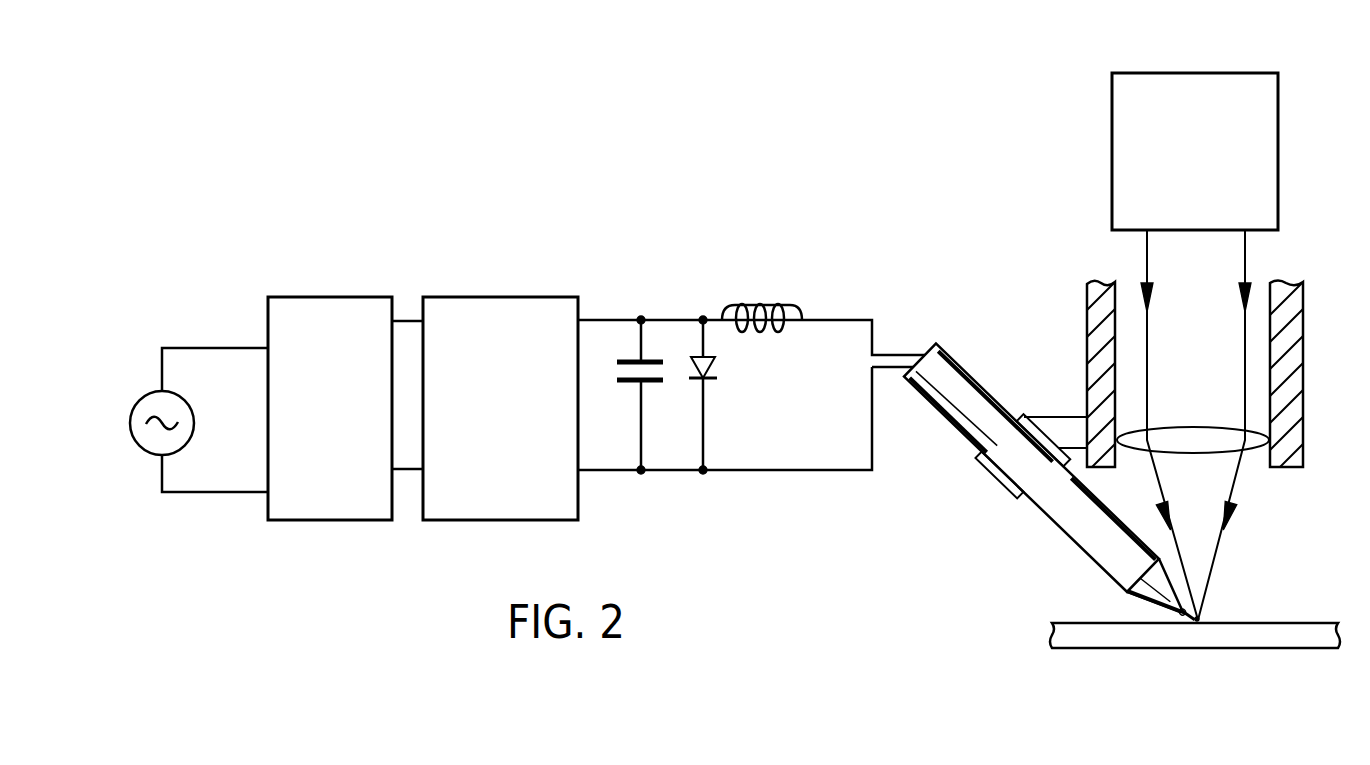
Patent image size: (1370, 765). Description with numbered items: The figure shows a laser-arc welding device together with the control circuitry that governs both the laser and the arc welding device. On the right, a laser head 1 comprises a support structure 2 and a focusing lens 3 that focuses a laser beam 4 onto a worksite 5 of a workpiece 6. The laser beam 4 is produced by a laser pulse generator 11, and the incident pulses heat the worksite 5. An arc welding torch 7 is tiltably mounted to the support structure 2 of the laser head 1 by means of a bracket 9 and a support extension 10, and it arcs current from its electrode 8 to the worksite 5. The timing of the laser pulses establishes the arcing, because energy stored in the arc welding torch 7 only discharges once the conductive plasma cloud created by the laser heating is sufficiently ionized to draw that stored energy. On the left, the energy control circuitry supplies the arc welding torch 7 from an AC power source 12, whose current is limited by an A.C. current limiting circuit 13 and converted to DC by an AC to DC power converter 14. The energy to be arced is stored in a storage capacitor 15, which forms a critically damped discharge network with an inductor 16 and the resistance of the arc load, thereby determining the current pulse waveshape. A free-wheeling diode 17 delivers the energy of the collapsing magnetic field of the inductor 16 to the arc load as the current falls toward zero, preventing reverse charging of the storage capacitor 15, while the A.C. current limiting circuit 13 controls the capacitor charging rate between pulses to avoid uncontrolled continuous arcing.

The laser head 1 is at (1087, 299).
The support structure 2 is at (1303, 348).
The focusing lens 3 is at (1182, 427).
The laser beam 4 is at (1233, 492).
The worksite 5 is at (1203, 619).
The workpiece 6 is at (1075, 622).
The arc welding torch 7 is at (1080, 543).
The electrode 8 is at (1188, 618).
The bracket 9 is at (1005, 485).
The support extension 10 is at (1063, 417).
The laser pulse generator 11 is at (1278, 168).
The AC power source 12 is at (171, 390).
The A.C. current limiting circuit 13 is at (320, 297).
The AC to DC power converter 14 is at (482, 297).
The storage capacitor 15 is at (641, 350).
The inductor 16 is at (765, 304).
The free-wheeling diode 17 is at (717, 367).